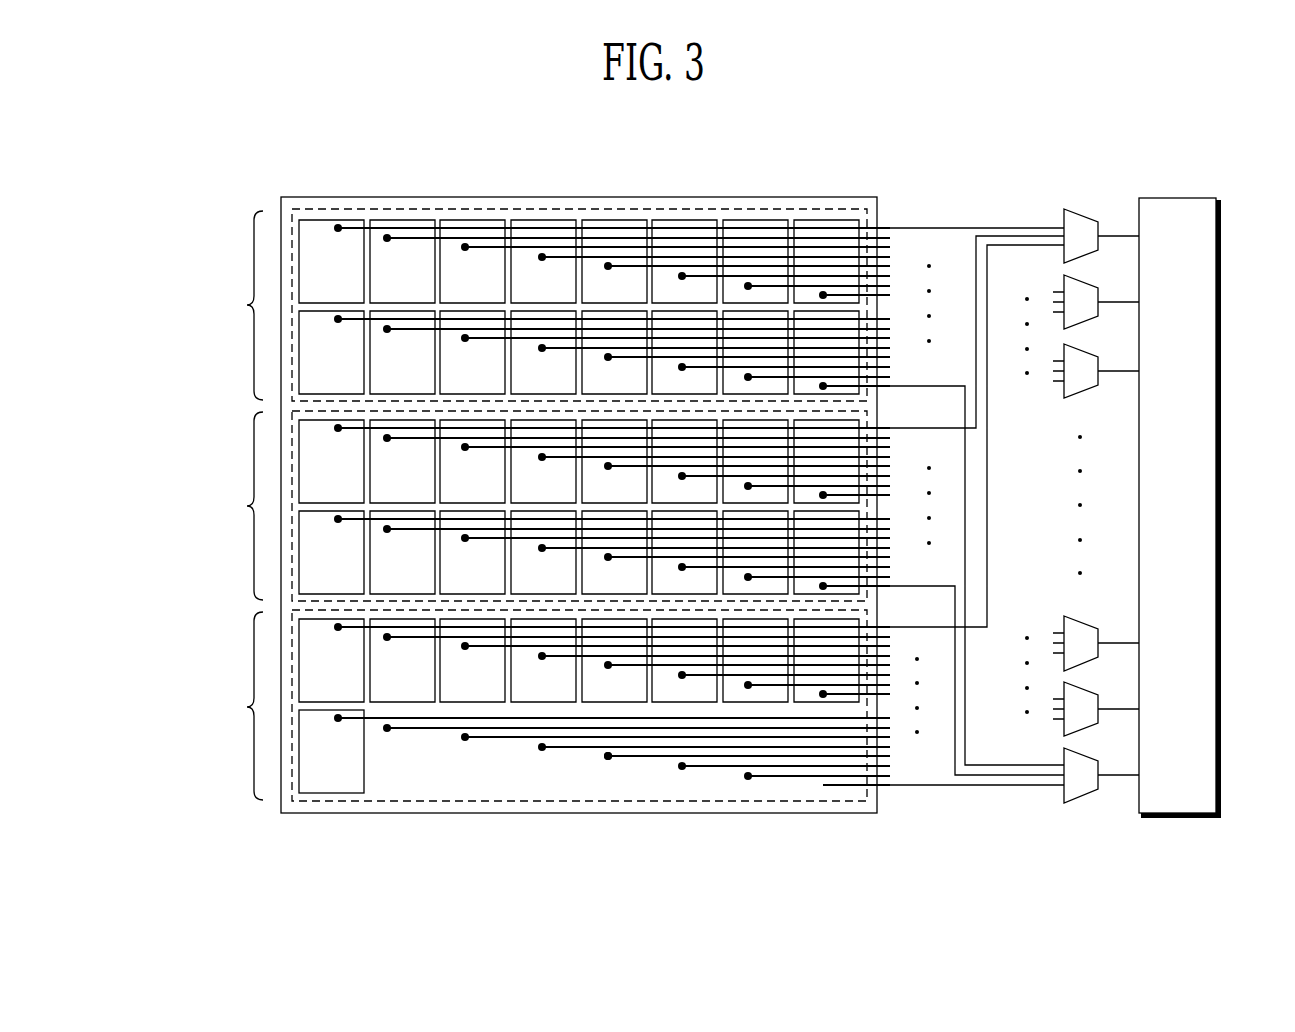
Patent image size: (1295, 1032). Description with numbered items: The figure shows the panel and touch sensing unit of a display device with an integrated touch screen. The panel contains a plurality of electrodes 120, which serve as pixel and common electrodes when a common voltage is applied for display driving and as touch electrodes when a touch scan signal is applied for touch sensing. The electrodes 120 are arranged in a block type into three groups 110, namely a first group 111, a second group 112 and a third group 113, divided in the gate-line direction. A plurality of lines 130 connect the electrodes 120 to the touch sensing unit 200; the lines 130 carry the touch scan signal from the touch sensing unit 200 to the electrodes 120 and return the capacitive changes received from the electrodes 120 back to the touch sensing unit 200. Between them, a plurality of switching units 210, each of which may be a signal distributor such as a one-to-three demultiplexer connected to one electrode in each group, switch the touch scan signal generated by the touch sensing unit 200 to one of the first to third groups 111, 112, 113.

The groups 110 is at (497, 530).
The first group 111 is at (295, 228).
The second group 112 is at (295, 428).
The third group 113 is at (297, 813).
The electrodes 120 is at (330, 772).
The lines 130 is at (630, 757).
The touch sensing unit 200 is at (1221, 483).
The switching units 210 is at (1085, 798).